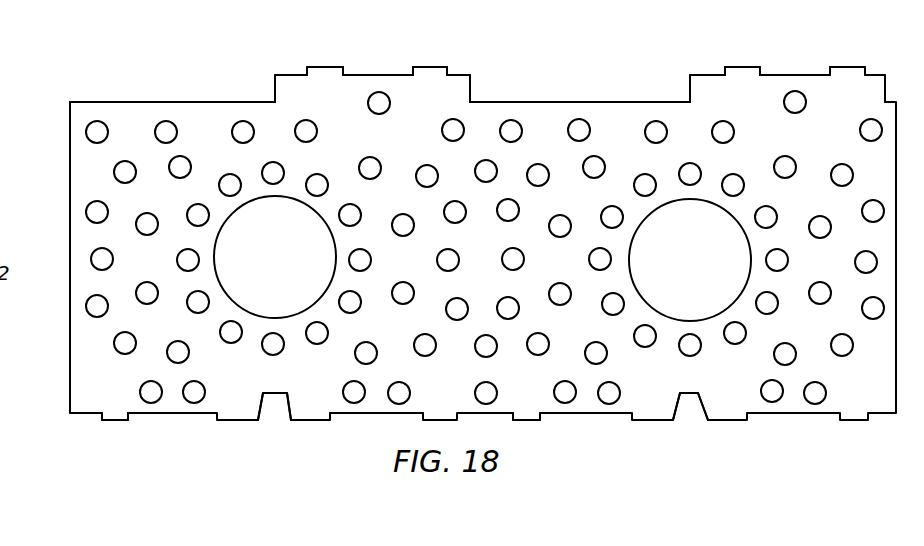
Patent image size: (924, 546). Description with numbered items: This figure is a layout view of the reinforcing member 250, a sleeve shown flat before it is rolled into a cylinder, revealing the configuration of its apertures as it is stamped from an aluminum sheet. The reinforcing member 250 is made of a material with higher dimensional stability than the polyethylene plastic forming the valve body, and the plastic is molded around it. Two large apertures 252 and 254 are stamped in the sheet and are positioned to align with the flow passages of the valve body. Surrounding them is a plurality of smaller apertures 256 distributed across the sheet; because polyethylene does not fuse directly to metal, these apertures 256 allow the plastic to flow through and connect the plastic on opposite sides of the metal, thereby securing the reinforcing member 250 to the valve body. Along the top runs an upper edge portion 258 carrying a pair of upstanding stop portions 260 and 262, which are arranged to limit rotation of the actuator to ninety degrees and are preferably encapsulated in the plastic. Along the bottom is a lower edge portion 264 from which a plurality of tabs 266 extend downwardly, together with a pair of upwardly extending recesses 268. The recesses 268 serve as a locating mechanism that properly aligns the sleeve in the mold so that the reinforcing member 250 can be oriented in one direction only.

The reinforcing member 250 is at (566, 73).
The aperture 252 is at (699, 248).
The aperture 254 is at (284, 248).
The apertures 256 is at (87, 129).
The upper edge portion 258 is at (165, 102).
The stop portion 260 is at (793, 75).
The stop portion 262 is at (375, 74).
The lower edge portion 264 is at (397, 414).
The tabs 266 is at (117, 421).
The recesses 268 is at (272, 397).